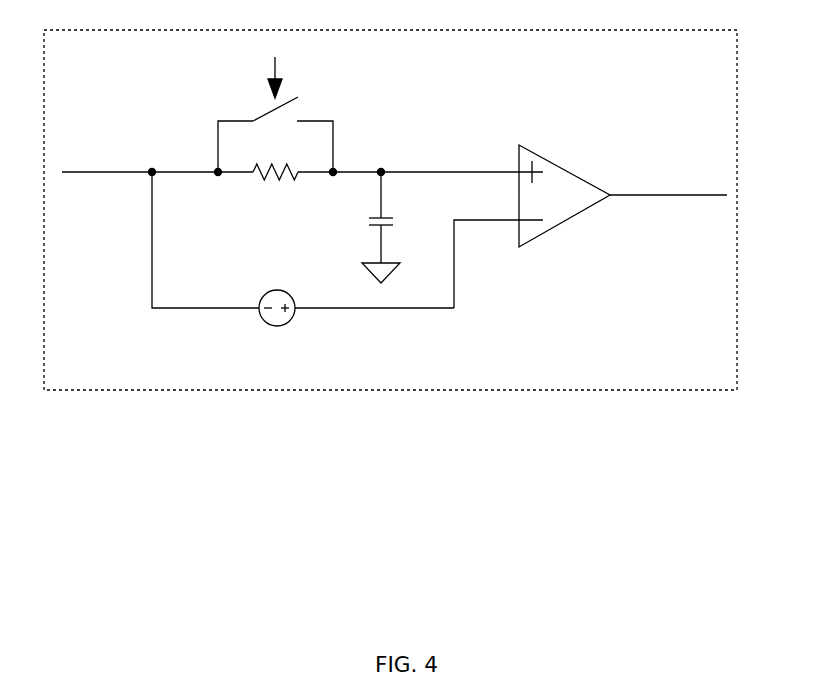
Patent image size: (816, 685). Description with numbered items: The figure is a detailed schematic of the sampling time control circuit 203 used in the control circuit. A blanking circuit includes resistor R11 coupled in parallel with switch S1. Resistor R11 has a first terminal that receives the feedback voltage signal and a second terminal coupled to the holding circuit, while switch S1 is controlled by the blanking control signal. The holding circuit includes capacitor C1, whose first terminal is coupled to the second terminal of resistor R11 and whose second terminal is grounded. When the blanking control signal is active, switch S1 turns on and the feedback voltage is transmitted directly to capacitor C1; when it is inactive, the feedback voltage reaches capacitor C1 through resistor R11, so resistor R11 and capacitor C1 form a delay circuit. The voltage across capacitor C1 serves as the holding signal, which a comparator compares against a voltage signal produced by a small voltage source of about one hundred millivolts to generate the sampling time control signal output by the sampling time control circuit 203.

The sampling time control circuit 203 is at (390, 210).
The switch S1 is at (275, 134).
The resistor R11 is at (275, 185).
The capacitor C1 is at (368, 227).